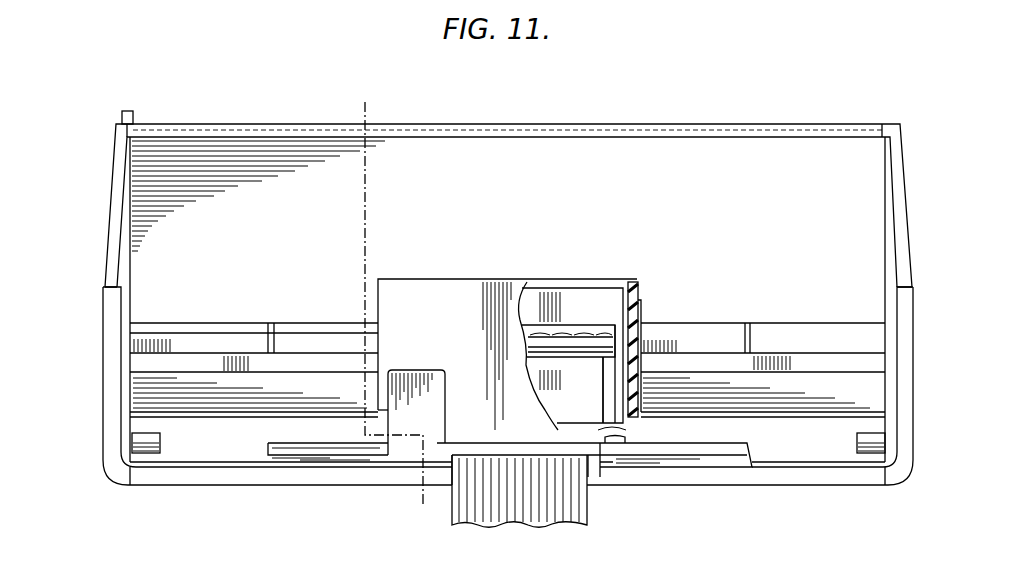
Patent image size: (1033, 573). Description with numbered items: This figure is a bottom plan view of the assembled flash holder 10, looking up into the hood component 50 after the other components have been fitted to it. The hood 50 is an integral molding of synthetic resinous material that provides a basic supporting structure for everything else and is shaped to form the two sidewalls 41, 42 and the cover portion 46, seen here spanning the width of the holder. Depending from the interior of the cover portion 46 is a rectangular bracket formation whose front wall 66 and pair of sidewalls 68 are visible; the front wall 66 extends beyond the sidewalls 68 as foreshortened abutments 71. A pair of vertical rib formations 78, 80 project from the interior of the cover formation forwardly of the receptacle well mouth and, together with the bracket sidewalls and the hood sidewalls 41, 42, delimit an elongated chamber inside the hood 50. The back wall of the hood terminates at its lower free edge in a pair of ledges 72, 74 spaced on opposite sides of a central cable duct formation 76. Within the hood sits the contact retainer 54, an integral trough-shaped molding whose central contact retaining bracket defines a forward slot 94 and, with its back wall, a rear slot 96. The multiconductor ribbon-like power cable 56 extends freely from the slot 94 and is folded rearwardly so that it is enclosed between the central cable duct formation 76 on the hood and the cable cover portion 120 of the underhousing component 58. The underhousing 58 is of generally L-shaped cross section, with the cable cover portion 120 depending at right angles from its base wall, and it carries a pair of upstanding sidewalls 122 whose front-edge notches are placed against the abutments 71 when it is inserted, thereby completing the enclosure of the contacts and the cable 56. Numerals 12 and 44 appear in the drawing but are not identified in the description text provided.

The holder 10 is at (636, 100).
The section line 12 is at (350, 109).
The sidewall 41 is at (106, 405).
The sidewall 42 is at (906, 427).
The support foot block 44 is at (156, 456).
The cover portion 46 is at (611, 180).
The hood component 50 is at (108, 194).
The contact retainer 54 is at (213, 441).
The power cable 56 is at (531, 514).
The underhousing component 58 is at (416, 279).
The front wall 66 is at (566, 282).
The sidewalls 68 is at (622, 312).
The abutments 71 is at (640, 284).
The ledge 72 is at (352, 456).
The ledge 74 is at (712, 468).
The central cable duct formation 76 is at (598, 466).
The vertical rib formation 78 is at (268, 335).
The vertical rib formation 80 is at (752, 348).
The forward slot 94 is at (537, 348).
The rear slot 96 is at (631, 433).
The cable cover portion 120 is at (476, 442).
The sidewalls 122 is at (641, 318).